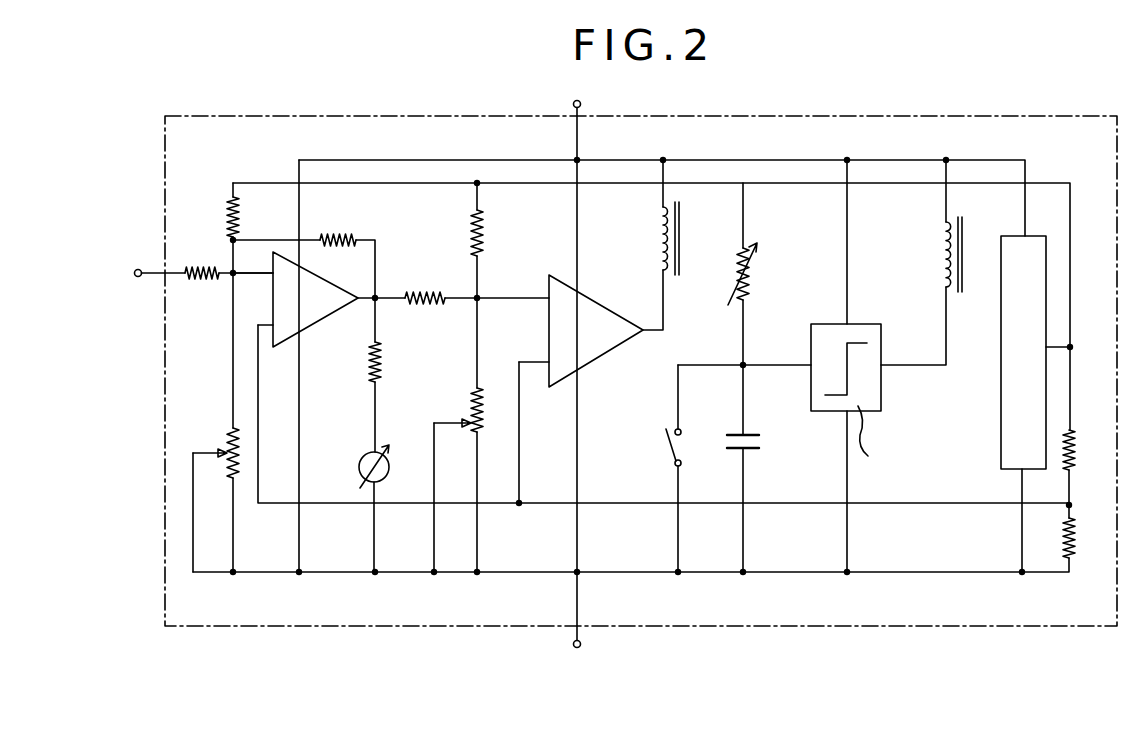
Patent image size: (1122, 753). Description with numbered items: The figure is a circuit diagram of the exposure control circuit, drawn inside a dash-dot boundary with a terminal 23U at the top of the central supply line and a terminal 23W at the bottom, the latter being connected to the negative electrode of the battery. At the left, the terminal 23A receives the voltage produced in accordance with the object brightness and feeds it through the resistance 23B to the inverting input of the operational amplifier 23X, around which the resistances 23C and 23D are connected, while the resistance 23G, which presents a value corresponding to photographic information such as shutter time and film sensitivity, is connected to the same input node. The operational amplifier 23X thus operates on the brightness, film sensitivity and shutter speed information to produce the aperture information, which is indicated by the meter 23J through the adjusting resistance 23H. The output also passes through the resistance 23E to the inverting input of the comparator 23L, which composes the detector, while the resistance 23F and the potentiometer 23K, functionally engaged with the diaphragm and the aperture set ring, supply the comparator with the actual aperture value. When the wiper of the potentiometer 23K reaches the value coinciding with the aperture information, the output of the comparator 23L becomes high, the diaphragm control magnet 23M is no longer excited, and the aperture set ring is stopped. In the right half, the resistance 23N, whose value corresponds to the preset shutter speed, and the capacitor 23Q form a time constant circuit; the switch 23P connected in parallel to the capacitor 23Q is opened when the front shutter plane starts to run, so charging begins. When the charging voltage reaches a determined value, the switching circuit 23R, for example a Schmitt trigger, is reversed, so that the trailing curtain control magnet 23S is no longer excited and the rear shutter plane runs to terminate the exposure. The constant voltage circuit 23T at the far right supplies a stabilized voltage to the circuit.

The terminal 23A is at (152, 264).
The resistance 23B is at (208, 264).
The bias resistor 23C is at (239, 216).
The resistance 23D is at (340, 226).
The resistance 23E is at (430, 282).
The resistance 23F is at (483, 235).
The resistance 23G is at (228, 446).
The adjusting resistance 23H is at (381, 363).
The meter 23J is at (359, 466).
The potentiometer 23K is at (471, 410).
The comparator 23L is at (590, 360).
The diaphragm control magnet 23M is at (660, 238).
The resistance 23N is at (752, 276).
The switch 23P is at (669, 443).
The capacitor 23Q is at (760, 443).
The switching circuit 23R is at (882, 390).
The trailing curtain control magnet 23S is at (943, 258).
The constant voltage circuit 23T is at (1000, 419).
The power supply terminal 23U is at (580, 104).
The terminal 23W is at (580, 644).
The operational amplifier 23X is at (314, 310).